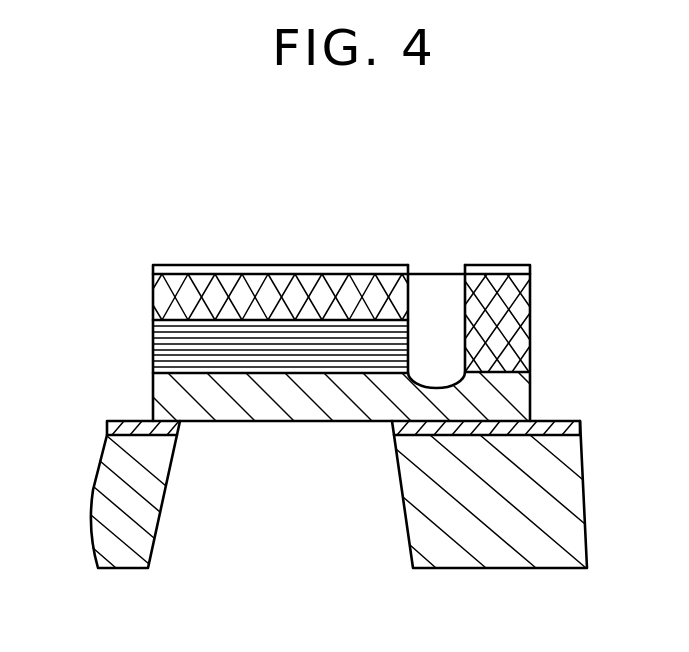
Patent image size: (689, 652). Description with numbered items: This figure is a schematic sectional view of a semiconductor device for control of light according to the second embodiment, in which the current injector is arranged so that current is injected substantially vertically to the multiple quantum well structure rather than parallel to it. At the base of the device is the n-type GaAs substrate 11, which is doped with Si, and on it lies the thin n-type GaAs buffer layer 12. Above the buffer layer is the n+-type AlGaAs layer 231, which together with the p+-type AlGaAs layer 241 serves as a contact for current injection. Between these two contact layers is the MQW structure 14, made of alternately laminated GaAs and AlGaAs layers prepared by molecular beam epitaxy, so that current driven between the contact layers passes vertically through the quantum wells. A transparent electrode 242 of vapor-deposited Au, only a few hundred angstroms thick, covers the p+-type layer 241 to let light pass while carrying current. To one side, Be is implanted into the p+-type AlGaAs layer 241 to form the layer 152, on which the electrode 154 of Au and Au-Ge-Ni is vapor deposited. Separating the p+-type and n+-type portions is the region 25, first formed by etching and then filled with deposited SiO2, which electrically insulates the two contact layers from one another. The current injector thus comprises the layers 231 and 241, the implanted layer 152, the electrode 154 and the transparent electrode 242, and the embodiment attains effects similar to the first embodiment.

The substrate 11 is at (565, 506).
The buffer layer 12 is at (575, 421).
The MQW structure 14 is at (151, 322).
The n+-type layer 231 is at (520, 388).
The p+-type layer 241 is at (152, 299).
The transparent electrode 242 is at (172, 268).
The region 25 is at (445, 283).
The n+-type electrode contact 152 is at (520, 312).
The electrode 154 is at (508, 268).